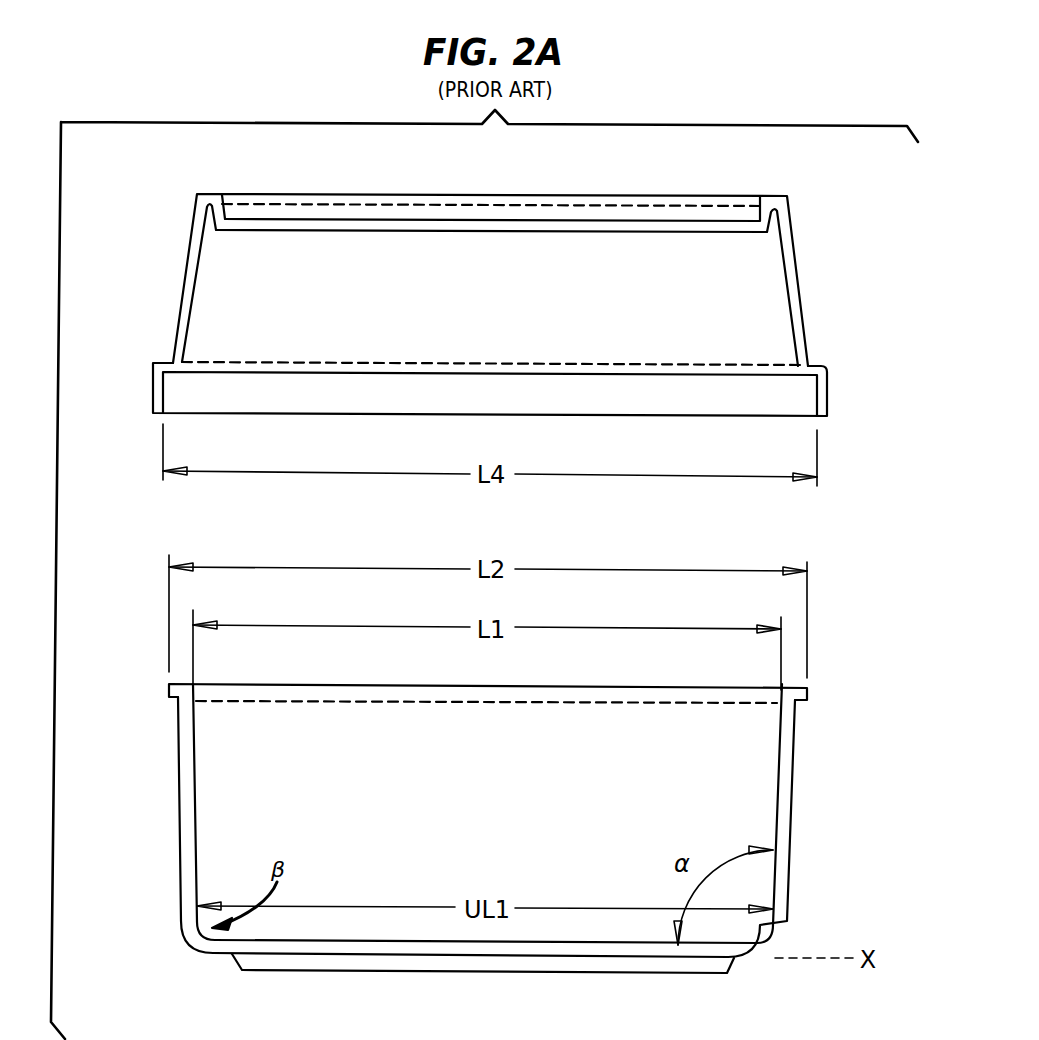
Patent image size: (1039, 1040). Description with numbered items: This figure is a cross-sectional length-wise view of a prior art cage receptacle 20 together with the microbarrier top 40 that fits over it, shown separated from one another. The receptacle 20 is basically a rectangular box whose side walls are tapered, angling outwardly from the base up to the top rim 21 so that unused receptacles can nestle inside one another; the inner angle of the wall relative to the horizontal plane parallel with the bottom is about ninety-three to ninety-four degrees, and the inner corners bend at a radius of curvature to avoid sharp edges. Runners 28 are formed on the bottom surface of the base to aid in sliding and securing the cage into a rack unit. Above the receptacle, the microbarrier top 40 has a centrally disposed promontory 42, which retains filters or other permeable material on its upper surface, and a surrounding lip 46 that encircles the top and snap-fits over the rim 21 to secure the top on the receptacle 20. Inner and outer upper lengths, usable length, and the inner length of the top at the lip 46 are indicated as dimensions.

The receptacle 20 is at (213, 857).
The rim 21 is at (170, 688).
The runners 28 is at (515, 972).
The microbarrier top 40 is at (800, 277).
The promontory 42 is at (210, 296).
The lip 46 is at (802, 398).